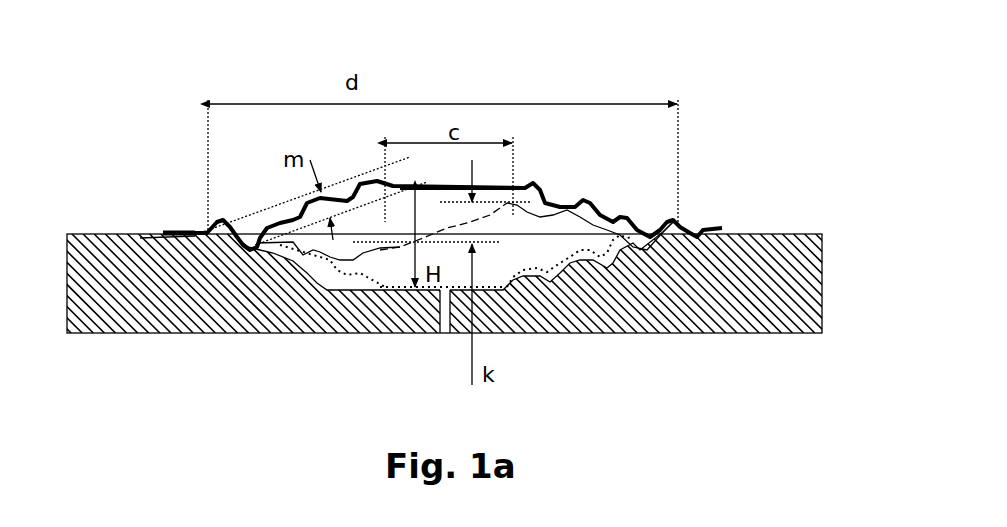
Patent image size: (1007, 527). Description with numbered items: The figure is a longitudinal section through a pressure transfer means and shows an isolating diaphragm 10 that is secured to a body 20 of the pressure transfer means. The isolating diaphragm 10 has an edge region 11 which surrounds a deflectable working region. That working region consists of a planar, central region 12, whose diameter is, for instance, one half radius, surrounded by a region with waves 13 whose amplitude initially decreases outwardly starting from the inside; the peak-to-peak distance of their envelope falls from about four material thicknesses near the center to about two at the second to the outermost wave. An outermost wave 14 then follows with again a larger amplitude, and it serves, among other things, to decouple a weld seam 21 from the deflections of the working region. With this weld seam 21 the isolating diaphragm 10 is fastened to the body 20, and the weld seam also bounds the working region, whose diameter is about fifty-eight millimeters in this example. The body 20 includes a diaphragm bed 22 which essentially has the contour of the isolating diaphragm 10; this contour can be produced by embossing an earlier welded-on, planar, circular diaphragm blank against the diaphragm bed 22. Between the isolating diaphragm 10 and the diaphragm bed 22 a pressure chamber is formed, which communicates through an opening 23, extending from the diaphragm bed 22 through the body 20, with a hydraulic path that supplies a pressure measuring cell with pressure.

The isolating diaphragm 10 is at (258, 164).
The edge region 11 is at (140, 238).
The planar central region 12 is at (430, 187).
The region with waves 13 is at (605, 208).
The outermost wave 14 is at (673, 222).
The body 20 is at (100, 233).
The weld seam 21 is at (193, 233).
The diaphragm bed 22 is at (312, 283).
The opening 23 is at (440, 312).